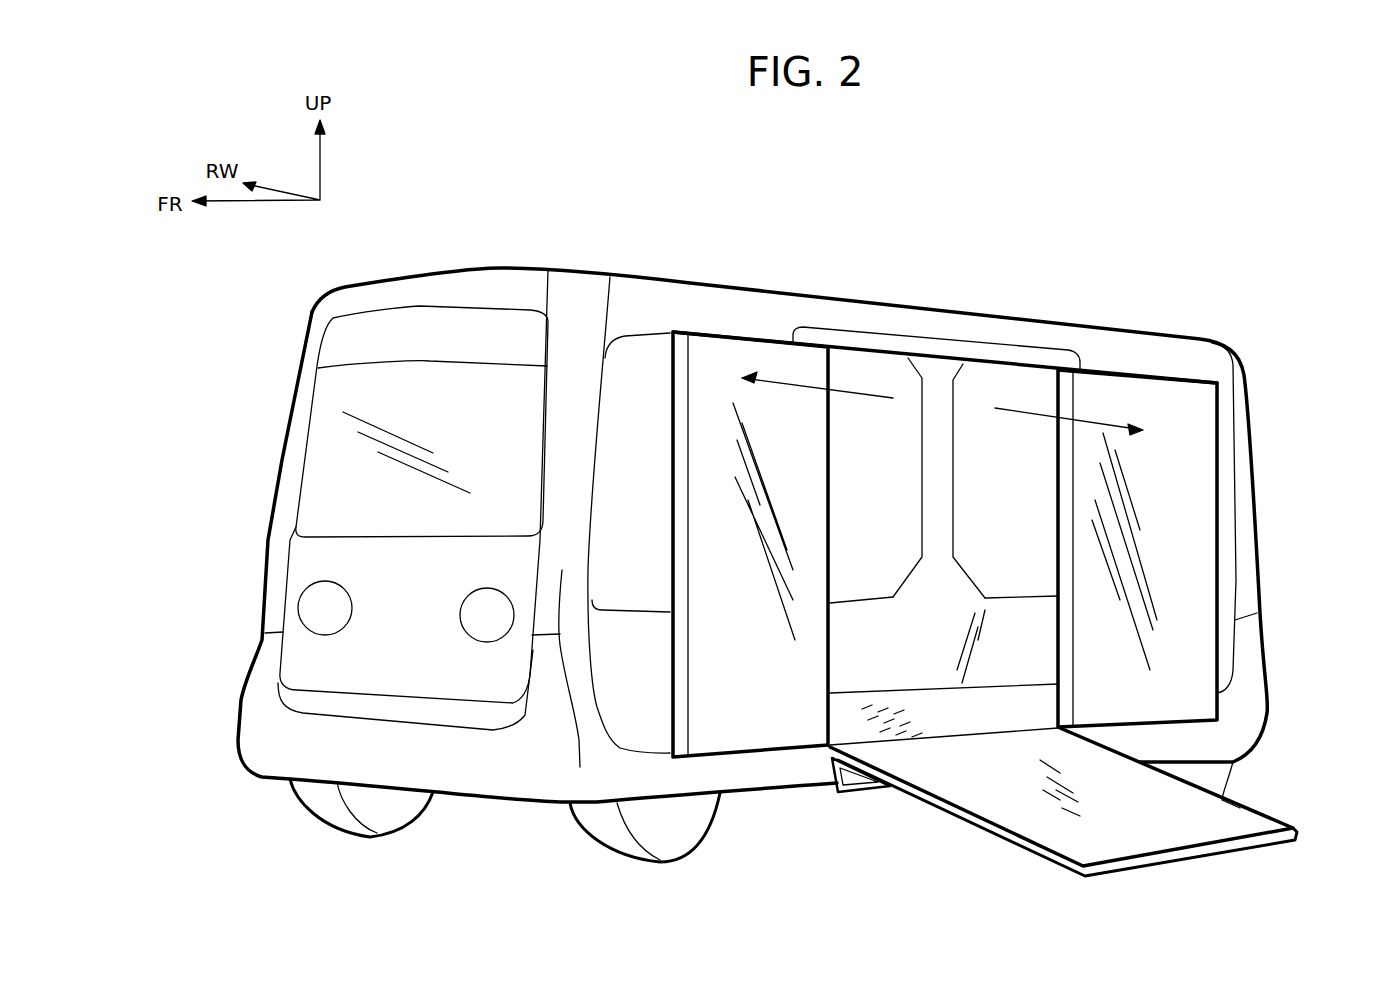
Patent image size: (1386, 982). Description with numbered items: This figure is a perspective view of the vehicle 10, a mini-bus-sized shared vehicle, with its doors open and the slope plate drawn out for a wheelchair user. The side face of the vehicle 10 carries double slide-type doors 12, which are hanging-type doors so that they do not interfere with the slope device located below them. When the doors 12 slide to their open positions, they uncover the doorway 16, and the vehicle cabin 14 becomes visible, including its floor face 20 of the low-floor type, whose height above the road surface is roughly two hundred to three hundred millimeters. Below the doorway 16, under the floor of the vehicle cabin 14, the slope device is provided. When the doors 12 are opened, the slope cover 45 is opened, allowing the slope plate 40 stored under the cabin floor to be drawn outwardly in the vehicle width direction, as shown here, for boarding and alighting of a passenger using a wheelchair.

The vehicle 10 is at (437, 274).
The doors 12 is at (713, 372).
The vehicle cabin 14 is at (856, 495).
The doorway 16 is at (908, 372).
The floor face 20 is at (930, 700).
The slope plate 40 is at (1210, 823).
The slope cover 45 is at (857, 793).